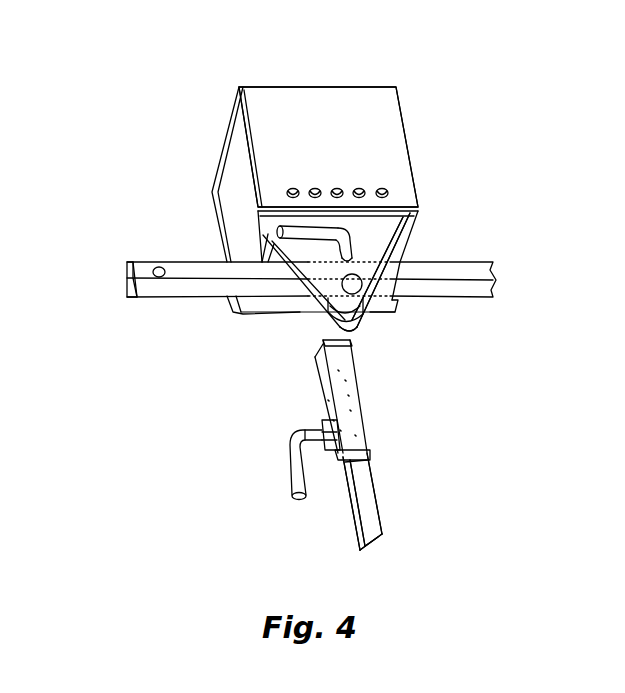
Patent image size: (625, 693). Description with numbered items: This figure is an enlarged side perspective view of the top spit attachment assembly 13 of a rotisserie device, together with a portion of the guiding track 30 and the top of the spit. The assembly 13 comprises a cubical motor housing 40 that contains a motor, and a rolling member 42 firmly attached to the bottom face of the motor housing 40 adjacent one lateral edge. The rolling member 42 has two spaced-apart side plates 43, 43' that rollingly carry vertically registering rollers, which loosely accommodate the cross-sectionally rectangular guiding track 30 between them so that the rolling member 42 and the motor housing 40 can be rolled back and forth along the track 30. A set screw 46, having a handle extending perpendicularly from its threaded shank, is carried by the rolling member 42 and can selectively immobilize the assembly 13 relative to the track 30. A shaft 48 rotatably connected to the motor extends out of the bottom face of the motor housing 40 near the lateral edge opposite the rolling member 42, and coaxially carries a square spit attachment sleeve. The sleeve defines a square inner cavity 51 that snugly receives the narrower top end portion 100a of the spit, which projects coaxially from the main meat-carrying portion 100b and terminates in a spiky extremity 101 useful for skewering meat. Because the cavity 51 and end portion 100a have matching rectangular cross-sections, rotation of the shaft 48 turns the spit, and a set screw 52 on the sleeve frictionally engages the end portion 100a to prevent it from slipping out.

The top spit attachment assembly 13 is at (388, 110).
The guiding track 30 is at (138, 262).
The cubical motor housing 40 is at (328, 103).
The rolling member 42 is at (393, 230).
The side plate 43 is at (440, 270).
The side plate 43' is at (442, 320).
The set screw 46 is at (283, 222).
The shaft 48 is at (323, 331).
The inner cavity 51 is at (327, 385).
The set screw 52 is at (292, 475).
The top end portion 100a is at (348, 460).
The main meat-carrying portion 100b is at (370, 522).
The spiky extremity 101 is at (360, 402).